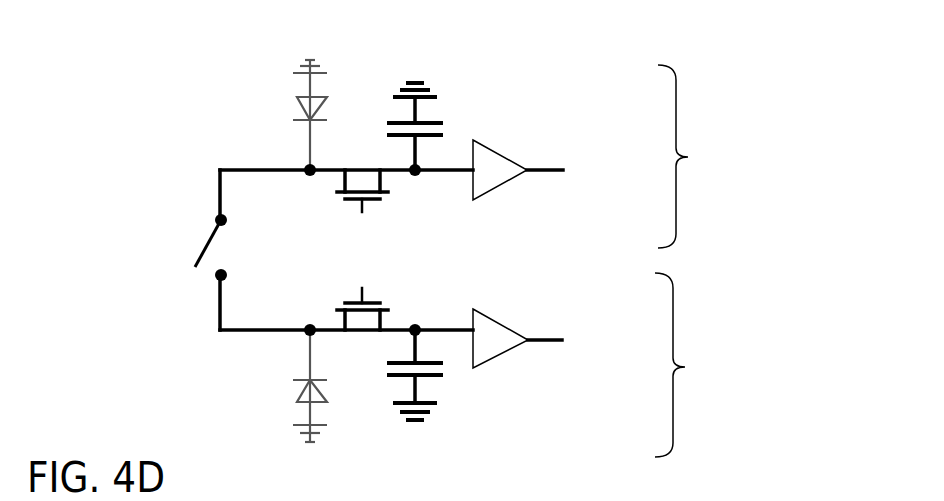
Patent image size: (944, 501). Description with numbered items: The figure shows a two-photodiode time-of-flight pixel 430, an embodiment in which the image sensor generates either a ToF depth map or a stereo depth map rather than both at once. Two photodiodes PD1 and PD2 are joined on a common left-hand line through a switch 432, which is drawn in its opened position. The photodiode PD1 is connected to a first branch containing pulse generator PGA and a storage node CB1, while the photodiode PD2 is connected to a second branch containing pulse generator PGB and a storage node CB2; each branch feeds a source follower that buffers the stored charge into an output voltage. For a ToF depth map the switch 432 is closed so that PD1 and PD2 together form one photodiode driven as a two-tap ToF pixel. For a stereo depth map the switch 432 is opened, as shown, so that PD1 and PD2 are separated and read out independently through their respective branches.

The 2PD ToF pixel 430 is at (232, 26).
The switch 432 is at (180, 248).
The first photodiode PD1 is at (334, 115).
The second photodiode PD2 is at (336, 386).
The pulse generator A PGA is at (362, 207).
The pulse generator B PGB is at (362, 298).
The storage node CB1 is at (439, 126).
The storage node CB2 is at (439, 375).